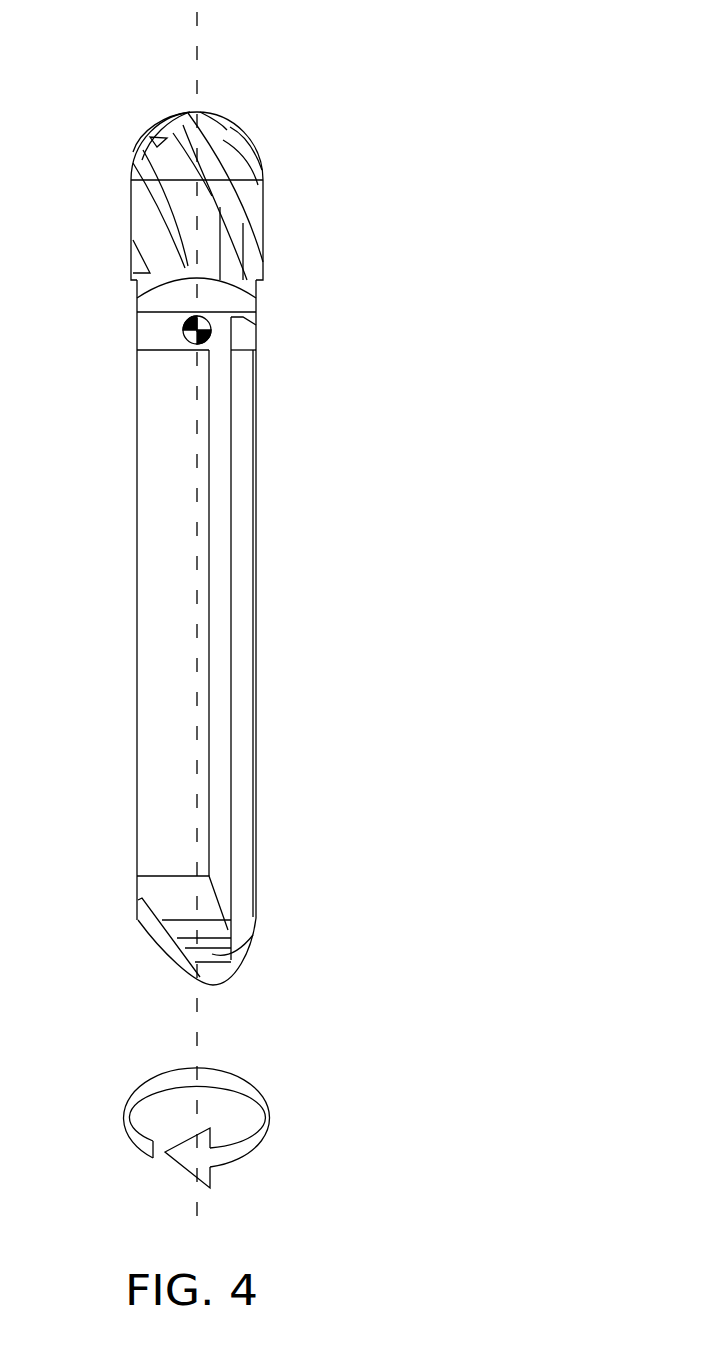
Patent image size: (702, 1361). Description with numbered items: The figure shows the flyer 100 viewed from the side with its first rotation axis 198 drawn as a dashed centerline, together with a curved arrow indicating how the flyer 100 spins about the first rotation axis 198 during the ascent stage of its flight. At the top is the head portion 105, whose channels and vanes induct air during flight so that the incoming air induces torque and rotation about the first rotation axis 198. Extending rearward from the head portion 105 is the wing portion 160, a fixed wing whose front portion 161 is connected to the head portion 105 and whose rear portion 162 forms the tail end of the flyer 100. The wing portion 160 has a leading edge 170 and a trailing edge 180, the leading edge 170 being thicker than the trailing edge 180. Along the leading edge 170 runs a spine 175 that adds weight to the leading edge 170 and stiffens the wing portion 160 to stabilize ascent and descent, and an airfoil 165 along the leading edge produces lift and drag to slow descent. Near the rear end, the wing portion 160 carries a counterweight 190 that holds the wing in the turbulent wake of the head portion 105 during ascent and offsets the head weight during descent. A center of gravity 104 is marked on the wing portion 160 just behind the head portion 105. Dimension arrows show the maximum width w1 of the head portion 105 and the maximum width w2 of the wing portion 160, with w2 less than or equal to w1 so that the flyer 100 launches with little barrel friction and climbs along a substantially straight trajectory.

The flyer 100 is at (483, 152).
The center of gravity 104 is at (185, 330).
The head portion 105 is at (281, 160).
The wing portion 160 is at (279, 668).
The front portion 161 is at (271, 372).
The rear portion 162 is at (259, 985).
The airfoil 165 is at (243, 803).
The leading edge 170 is at (256, 738).
The spine 175 is at (257, 495).
The trailing edge 180 is at (137, 740).
The counterweight 190 is at (216, 955).
The first rotation axis 198 is at (196, 96).
The maximum width of the head portion w1 is at (298, 211).
The maximum width of the wing portion w2 is at (298, 451).